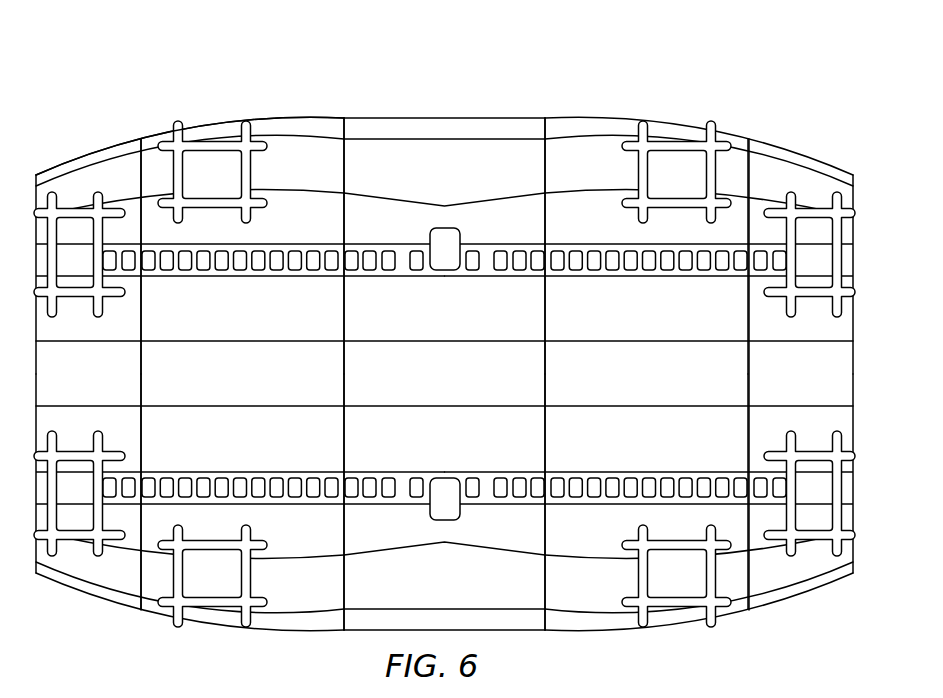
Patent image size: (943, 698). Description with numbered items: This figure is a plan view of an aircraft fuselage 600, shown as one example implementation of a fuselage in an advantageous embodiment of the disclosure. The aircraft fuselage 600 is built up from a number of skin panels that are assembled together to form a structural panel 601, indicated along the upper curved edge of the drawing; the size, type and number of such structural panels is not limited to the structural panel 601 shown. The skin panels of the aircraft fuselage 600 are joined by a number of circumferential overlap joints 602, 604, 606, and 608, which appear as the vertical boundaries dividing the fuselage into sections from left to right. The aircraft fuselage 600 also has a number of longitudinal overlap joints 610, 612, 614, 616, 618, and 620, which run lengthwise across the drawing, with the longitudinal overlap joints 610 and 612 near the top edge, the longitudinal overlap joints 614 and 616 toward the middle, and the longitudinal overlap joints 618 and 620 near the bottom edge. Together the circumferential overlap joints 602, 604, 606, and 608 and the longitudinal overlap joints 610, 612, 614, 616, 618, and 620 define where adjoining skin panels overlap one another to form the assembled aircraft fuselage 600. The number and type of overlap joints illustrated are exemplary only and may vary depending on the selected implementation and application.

The aircraft fuselage 600 is at (333, 65).
The structural panel 601 is at (273, 113).
The circumferential overlap joint 602 is at (140, 378).
The circumferential overlap joint 604 is at (343, 320).
The circumferential overlap joint 606 is at (546, 320).
The circumferential overlap joint 608 is at (750, 373).
The longitudinal overlap joint 610 is at (585, 137).
The longitudinal overlap joint 612 is at (563, 191).
The longitudinal overlap joint 614 is at (643, 343).
The longitudinal overlap joint 616 is at (622, 407).
The longitudinal overlap joint 618 is at (563, 558).
The longitudinal overlap joint 620 is at (587, 610).